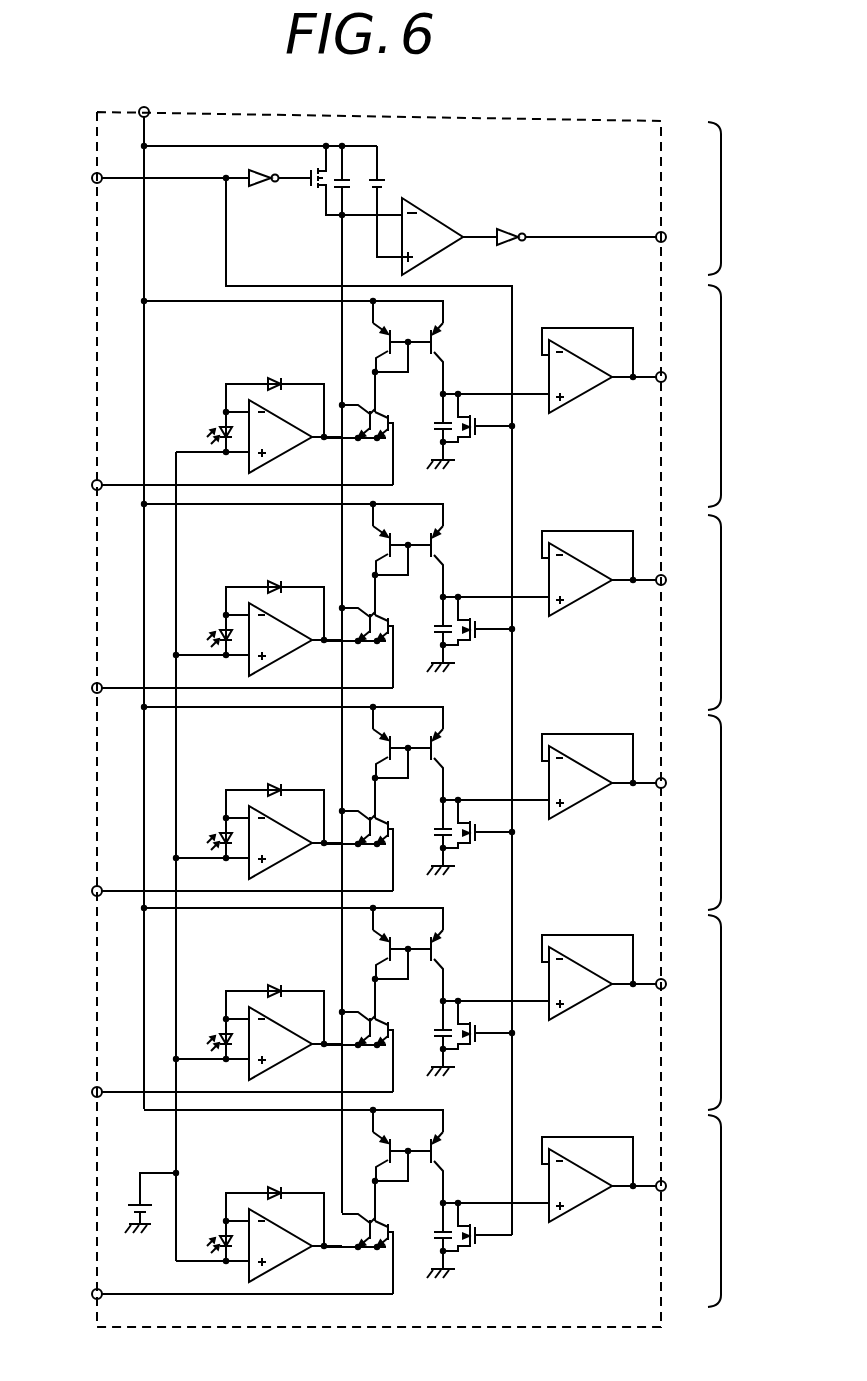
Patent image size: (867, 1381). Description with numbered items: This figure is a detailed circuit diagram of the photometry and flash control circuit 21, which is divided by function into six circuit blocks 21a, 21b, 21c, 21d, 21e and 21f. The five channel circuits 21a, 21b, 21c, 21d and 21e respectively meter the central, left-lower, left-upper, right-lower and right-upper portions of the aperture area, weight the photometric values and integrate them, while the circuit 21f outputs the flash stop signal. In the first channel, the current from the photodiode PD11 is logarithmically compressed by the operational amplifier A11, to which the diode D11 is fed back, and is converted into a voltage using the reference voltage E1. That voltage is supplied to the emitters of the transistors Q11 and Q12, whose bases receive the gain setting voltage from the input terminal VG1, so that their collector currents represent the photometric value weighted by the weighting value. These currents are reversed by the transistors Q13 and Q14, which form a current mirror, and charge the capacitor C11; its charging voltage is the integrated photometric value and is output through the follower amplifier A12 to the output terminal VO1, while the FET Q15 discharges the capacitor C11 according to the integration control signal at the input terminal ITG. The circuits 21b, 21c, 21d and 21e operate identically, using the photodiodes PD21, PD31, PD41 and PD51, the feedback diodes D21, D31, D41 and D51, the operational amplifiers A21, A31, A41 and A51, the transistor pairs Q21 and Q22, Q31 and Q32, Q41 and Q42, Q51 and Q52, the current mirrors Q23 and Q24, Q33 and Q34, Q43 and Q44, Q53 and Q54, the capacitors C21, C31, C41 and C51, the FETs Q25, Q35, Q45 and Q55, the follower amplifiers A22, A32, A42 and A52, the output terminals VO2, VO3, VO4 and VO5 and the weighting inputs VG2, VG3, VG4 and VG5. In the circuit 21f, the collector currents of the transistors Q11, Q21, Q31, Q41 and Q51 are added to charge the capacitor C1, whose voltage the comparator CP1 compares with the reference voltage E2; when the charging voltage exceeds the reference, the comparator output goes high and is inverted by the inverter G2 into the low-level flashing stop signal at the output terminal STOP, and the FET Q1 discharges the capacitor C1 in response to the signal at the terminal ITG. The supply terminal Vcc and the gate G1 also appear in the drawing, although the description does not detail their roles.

The photometry and flash control circuit 21 is at (553, 119).
The circuit block 21a is at (721, 337).
The circuit block 21b is at (721, 548).
The circuit block 21c is at (721, 758).
The circuit block 21d is at (721, 960).
The circuit block 21e is at (721, 1160).
The circuit block 21f is at (721, 182).
The supply voltage terminal Vcc is at (143, 100).
The input terminal ITG is at (78, 164).
The output terminal STOP is at (688, 226).
The inverter gate G1 is at (266, 168).
The inverter G2 is at (513, 222).
The FET Q1 is at (347, 184).
The capacitor C1 is at (351, 679).
The reference voltage E2 is at (388, 201).
The comparator CP1 is at (432, 236).
The reference voltage E1 is at (138, 1203).
The photodiode PD11 is at (213, 428).
The photodiode PD21 is at (194, 616).
The photodiode PD31 is at (194, 819).
The photodiode PD41 is at (194, 1020).
The photodiode PD51 is at (194, 1222).
The diode D11 is at (273, 369).
The diode D21 is at (273, 572).
The diode D31 is at (273, 775).
The diode D41 is at (273, 976).
The diode D51 is at (273, 1178).
The operational amplifier A11 is at (269, 436).
The operational amplifier A21 is at (269, 639).
The operational amplifier A31 is at (269, 842).
The operational amplifier A41 is at (269, 1043).
The operational amplifier A51 is at (269, 1245).
The follower amplifier A12 is at (580, 376).
The follower amplifier A22 is at (580, 579).
The follower amplifier A32 is at (580, 782).
The follower amplifier A42 is at (580, 983).
The follower amplifier A52 is at (580, 1185).
The transistor Q11 is at (360, 429).
The transistor Q21 is at (363, 649).
The transistor Q31 is at (363, 852).
The transistor Q41 is at (363, 1053).
The transistor Q51 is at (363, 1255).
The transistor Q12 is at (389, 415).
The transistor Q22 is at (396, 609).
The transistor Q32 is at (396, 812).
The transistor Q42 is at (396, 1013).
The transistor Q52 is at (396, 1215).
The transistor Q13 is at (380, 336).
The transistor Q23 is at (345, 545).
The transistor Q33 is at (345, 748).
The transistor Q43 is at (345, 949).
The transistor Q53 is at (345, 1151).
The transistor Q14 is at (446, 358).
The transistor Q24 is at (446, 561).
The transistor Q34 is at (446, 764).
The transistor Q44 is at (446, 965).
The transistor Q54 is at (446, 1167).
The capacitor C11 is at (433, 427).
The capacitor C21 is at (426, 649).
The capacitor C31 is at (426, 852).
The capacitor C41 is at (426, 1053).
The capacitor C51 is at (426, 1255).
The FET Q15 is at (476, 444).
The FET Q25 is at (476, 647).
The FET Q35 is at (476, 850).
The FET Q45 is at (476, 1051).
The FET Q55 is at (476, 1253).
The output terminal VO1 is at (680, 364).
The output terminal VO2 is at (680, 567).
The output terminal VO3 is at (680, 770).
The output terminal VO4 is at (680, 971).
The output terminal VO5 is at (680, 1173).
The input terminal VG1 is at (77, 469).
The input terminal VG2 is at (77, 672).
The input terminal VG3 is at (77, 875).
The input terminal VG4 is at (77, 1076).
The input terminal VG5 is at (77, 1278).